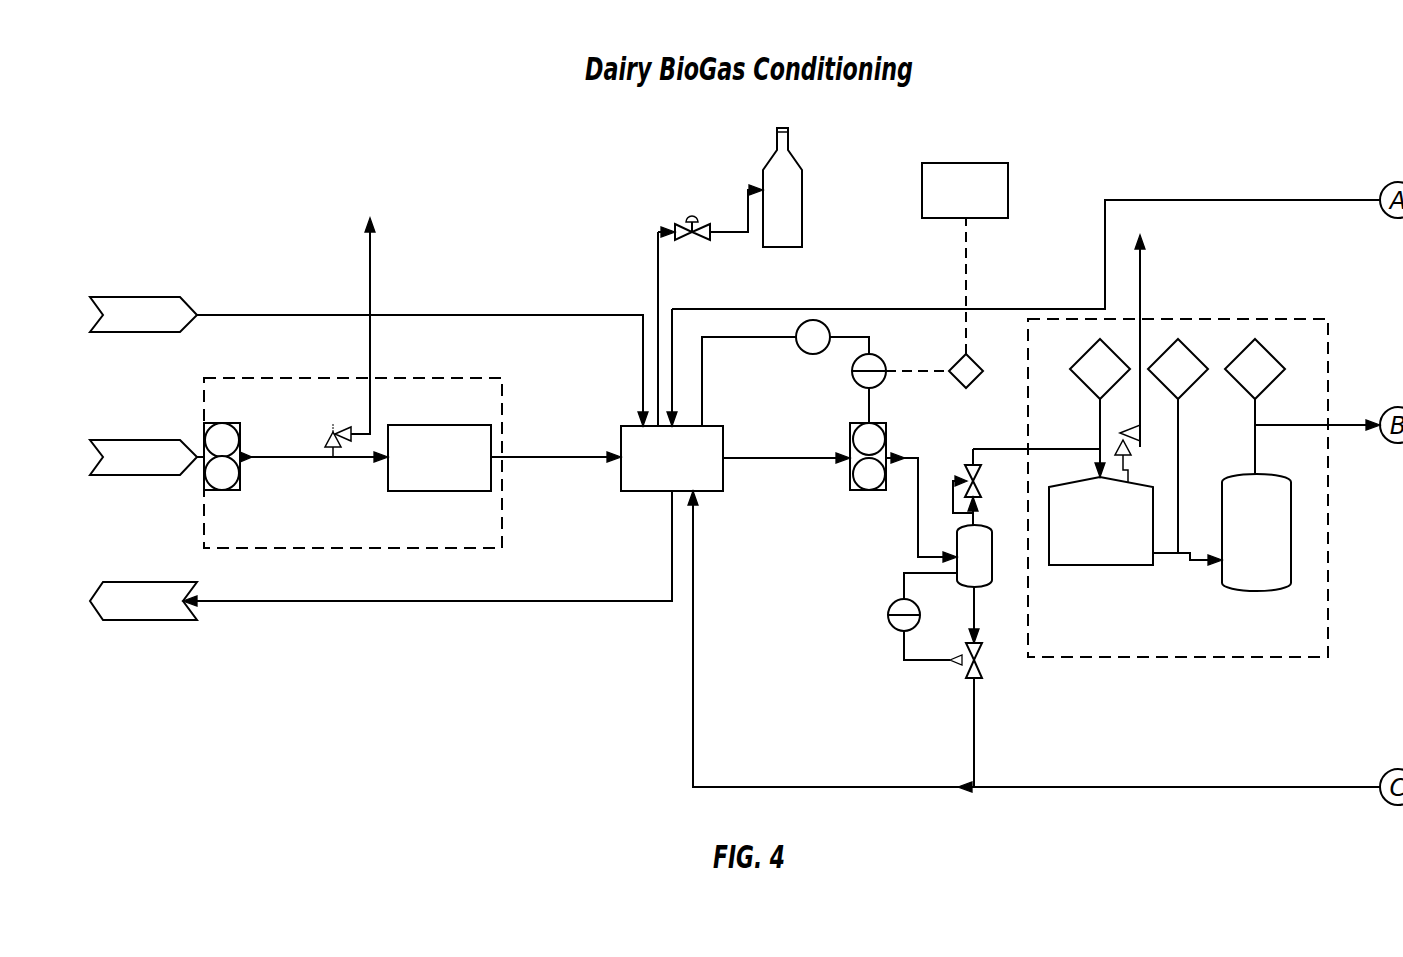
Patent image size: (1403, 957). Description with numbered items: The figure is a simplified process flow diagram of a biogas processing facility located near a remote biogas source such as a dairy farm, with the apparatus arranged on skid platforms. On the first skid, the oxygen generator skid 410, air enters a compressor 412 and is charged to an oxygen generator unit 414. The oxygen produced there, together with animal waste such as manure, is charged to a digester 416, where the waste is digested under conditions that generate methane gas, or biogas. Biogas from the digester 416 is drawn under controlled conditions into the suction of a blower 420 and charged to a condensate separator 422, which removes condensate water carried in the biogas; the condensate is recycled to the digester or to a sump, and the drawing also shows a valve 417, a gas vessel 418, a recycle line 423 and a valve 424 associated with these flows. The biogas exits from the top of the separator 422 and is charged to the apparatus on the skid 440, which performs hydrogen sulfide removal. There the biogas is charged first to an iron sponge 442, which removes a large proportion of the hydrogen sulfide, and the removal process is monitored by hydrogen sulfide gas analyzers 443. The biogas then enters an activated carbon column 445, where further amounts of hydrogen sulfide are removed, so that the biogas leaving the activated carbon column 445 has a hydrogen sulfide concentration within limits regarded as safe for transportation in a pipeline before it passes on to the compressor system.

The oxygen generator skid 410 is at (503, 548).
The compressor 412 is at (222, 423).
The oxygen generator unit 414 is at (445, 425).
The digester 416 is at (627, 426).
The control valve 417 is at (706, 226).
The gas cylinder 418 is at (766, 168).
The blower 420 is at (860, 490).
The condensate separator 422 is at (980, 590).
The recycle line 423 is at (816, 789).
The control valve 424 is at (1010, 447).
The skid 440 is at (1265, 658).
The iron sponge 442 is at (1100, 568).
The hydrogen sulfide gas analyzers 443 is at (1255, 339).
The activated carbon column 445 is at (1252, 592).